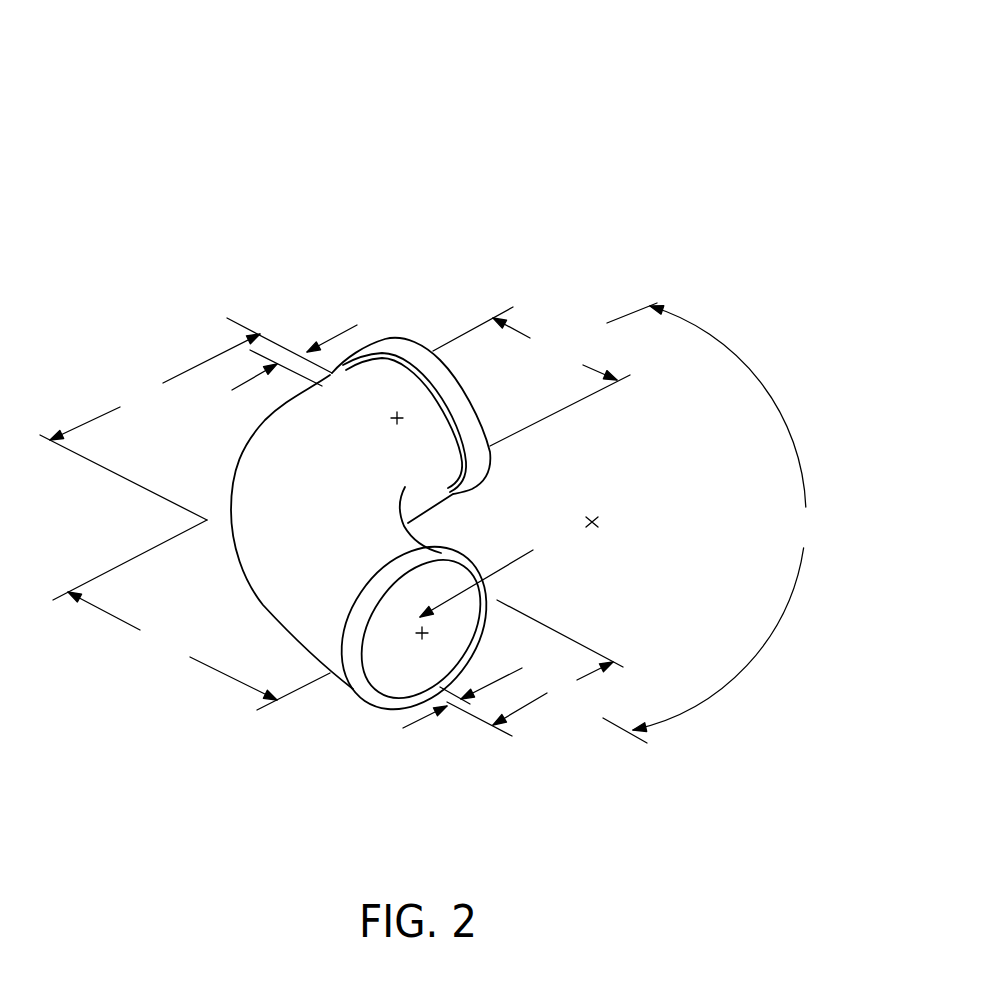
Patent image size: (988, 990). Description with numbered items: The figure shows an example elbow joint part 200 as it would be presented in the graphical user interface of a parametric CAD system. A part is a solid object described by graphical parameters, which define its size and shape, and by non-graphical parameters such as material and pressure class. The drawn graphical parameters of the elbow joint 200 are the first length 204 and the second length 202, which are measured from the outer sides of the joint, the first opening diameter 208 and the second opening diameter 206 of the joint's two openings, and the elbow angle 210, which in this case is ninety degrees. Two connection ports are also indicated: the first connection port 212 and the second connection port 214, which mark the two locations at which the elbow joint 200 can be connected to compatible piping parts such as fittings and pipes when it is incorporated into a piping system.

The elbow joint part 200 is at (110, 137).
The parameter L2 202 is at (145, 383).
The parameter L1 204 is at (140, 642).
The parameter D2 206 is at (557, 332).
The parameter D 208 is at (573, 697).
The angle A 210 is at (780, 533).
The connection port P1 212 is at (417, 637).
The connection port P2 214 is at (392, 424).